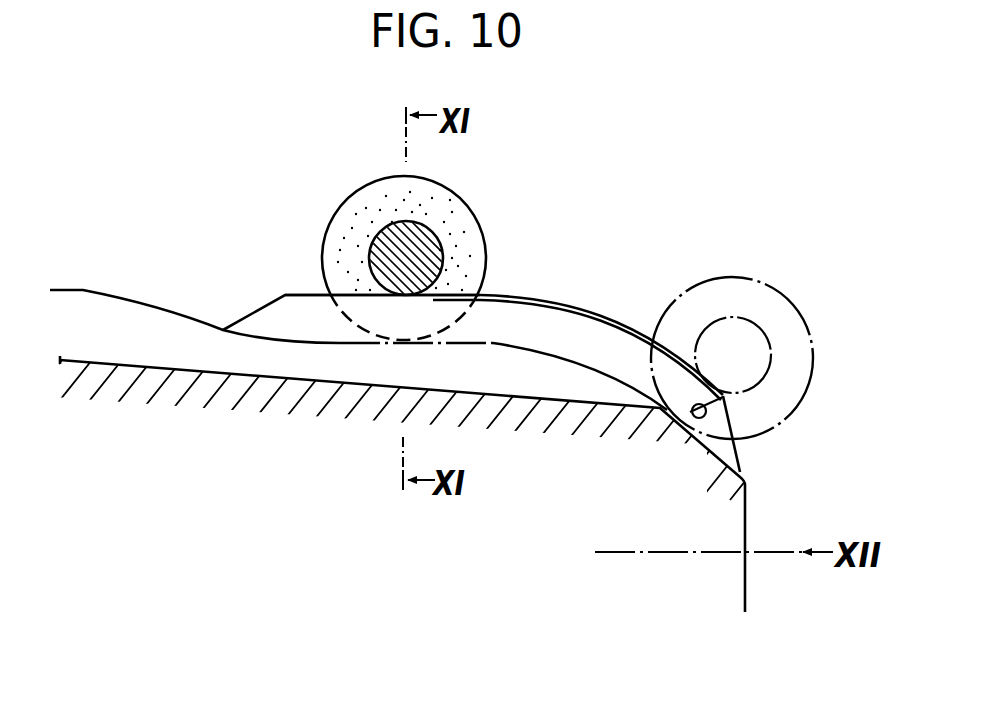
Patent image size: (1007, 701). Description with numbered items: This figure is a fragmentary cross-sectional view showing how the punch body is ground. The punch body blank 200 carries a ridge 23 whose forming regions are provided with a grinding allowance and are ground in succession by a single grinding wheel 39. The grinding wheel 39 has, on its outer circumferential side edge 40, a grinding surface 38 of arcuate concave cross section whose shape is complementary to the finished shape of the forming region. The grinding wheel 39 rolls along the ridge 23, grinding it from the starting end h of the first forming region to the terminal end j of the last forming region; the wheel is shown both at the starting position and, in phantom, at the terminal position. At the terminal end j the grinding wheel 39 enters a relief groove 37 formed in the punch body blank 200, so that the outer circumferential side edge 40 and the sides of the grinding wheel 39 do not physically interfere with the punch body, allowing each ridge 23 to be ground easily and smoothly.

The ridge 23 is at (590, 303).
The relief groove 37 is at (697, 420).
The grinding surface 38 is at (470, 252).
The grinding wheel 39 is at (340, 197).
The outer circumferential side edge 40 is at (478, 214).
The punch body blank 200 is at (320, 440).
The starting end h is at (285, 295).
The terminal end j is at (728, 398).